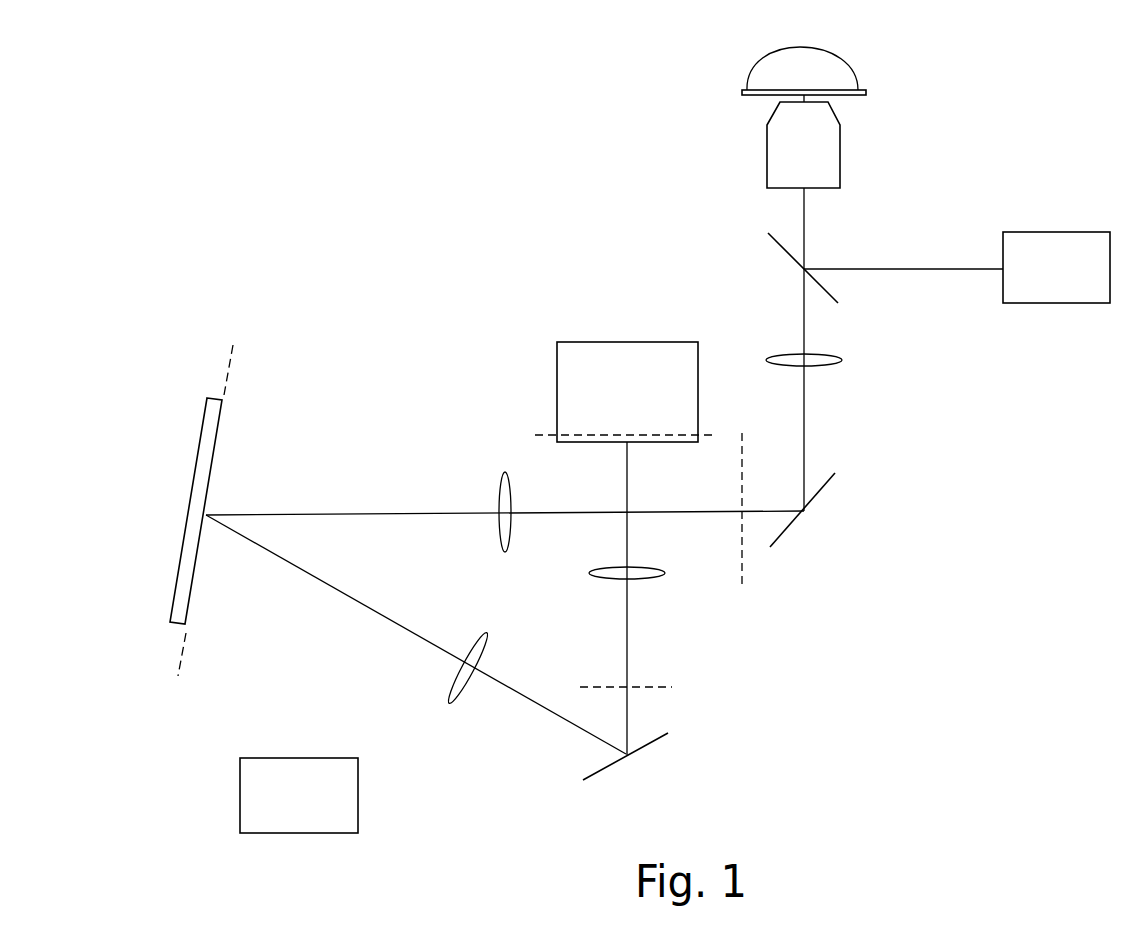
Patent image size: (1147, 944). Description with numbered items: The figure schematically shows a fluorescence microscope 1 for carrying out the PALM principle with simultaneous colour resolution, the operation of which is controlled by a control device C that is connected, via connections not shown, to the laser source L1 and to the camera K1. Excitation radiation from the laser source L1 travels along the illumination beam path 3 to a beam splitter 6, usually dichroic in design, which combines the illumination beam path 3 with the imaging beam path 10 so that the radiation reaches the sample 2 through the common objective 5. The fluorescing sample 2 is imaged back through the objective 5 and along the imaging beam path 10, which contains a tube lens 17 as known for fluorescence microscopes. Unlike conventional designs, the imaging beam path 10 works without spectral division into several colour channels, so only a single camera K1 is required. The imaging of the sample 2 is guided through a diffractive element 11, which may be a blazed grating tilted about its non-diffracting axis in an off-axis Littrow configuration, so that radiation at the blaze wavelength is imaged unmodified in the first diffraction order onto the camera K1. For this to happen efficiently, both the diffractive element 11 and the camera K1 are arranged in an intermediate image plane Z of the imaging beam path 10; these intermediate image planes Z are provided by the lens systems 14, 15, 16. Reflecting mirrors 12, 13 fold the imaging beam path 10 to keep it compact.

The fluorescence microscope 1 is at (444, 238).
The sample 2 is at (838, 89).
The illumination beam path 3 is at (975, 330).
The objective 5 is at (828, 152).
The beam splitter 6 is at (782, 246).
The imaging beam path 10 is at (826, 612).
The diffractive element 11 is at (192, 588).
The reflecting mirror 12 is at (666, 736).
The reflecting mirror 13 is at (826, 489).
The lens system 14 is at (589, 573).
The lens system 15 is at (498, 530).
The lens system 16 is at (488, 637).
The tube lens 17 is at (840, 358).
The laser source L1 is at (1056, 267).
The camera K1 is at (627, 392).
The control device C is at (358, 792).
The intermediate image plane Z is at (229, 367).